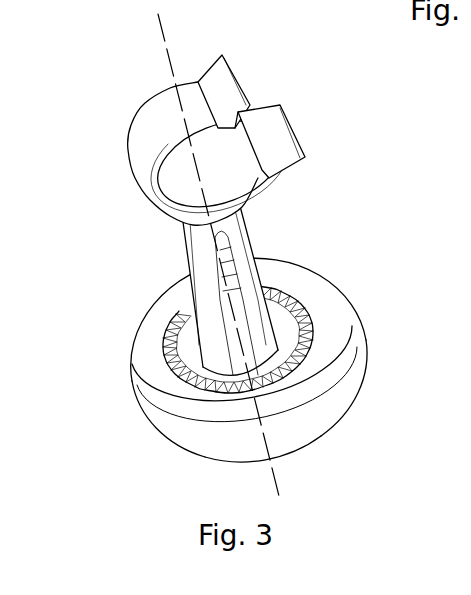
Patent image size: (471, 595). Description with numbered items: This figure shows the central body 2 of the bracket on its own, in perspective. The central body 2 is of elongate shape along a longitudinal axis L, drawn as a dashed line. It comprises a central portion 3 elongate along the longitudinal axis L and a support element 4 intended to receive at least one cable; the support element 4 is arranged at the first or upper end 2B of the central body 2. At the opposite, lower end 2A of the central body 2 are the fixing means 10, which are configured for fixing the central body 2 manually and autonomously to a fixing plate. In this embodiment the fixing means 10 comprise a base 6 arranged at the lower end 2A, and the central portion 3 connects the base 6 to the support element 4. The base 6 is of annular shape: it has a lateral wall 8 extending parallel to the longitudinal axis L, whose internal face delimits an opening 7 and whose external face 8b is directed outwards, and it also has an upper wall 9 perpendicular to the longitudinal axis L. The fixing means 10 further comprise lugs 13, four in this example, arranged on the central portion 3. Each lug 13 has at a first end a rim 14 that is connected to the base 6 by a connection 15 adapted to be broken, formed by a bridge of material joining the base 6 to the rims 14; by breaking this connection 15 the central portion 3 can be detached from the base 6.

The central body 2 is at (244, 290).
The lower end 2A is at (240, 388).
The upper end 2B is at (232, 128).
The central portion 3 is at (250, 248).
The support element 4 is at (155, 117).
The base 6 is at (208, 440).
The opening 7 is at (304, 460).
The lateral wall 8 is at (321, 417).
The external face 8b is at (338, 391).
The upper wall 9 is at (322, 367).
The fixing means 10 is at (166, 359).
The lugs 13 is at (258, 257).
The rim 14 is at (313, 330).
The connection adapted to be broken 15 is at (204, 410).
The longitudinal axis L is at (167, 40).